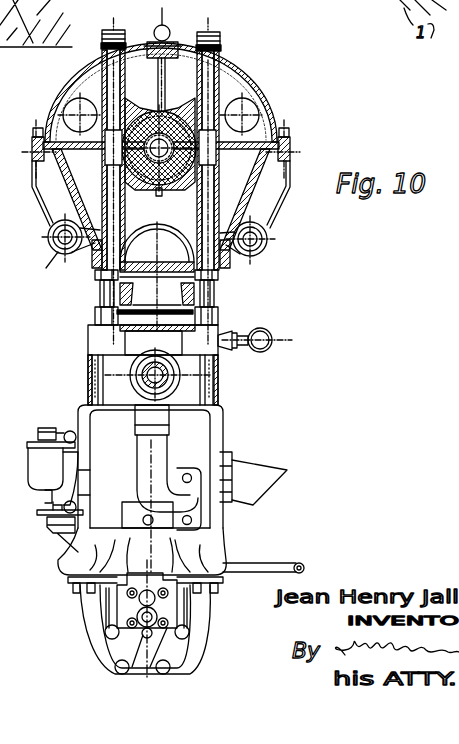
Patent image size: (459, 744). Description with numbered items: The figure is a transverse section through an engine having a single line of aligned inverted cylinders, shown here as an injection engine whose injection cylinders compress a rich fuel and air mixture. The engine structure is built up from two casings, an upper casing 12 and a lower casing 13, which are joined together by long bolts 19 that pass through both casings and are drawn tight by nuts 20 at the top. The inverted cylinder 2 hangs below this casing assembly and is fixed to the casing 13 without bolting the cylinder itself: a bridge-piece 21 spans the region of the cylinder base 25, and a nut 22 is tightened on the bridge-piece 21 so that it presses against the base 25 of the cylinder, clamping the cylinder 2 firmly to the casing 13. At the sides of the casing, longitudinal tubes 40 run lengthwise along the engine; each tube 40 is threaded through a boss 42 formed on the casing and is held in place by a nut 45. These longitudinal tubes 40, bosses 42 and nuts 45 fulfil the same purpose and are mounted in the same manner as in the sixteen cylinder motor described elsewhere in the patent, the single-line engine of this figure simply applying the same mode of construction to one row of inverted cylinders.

The casing 12 is at (174, 48).
The nuts 20 is at (223, 46).
The bolts 19 is at (220, 97).
The bosses 42 is at (262, 227).
The longitudinal tubes 40 is at (265, 252).
The nuts 45 is at (58, 252).
The casing 13 is at (144, 262).
The base of the cylinder 25 is at (154, 283).
The bridge-piece 21 is at (220, 296).
The nut 22 is at (210, 320).
The cylinder 2 is at (212, 372).